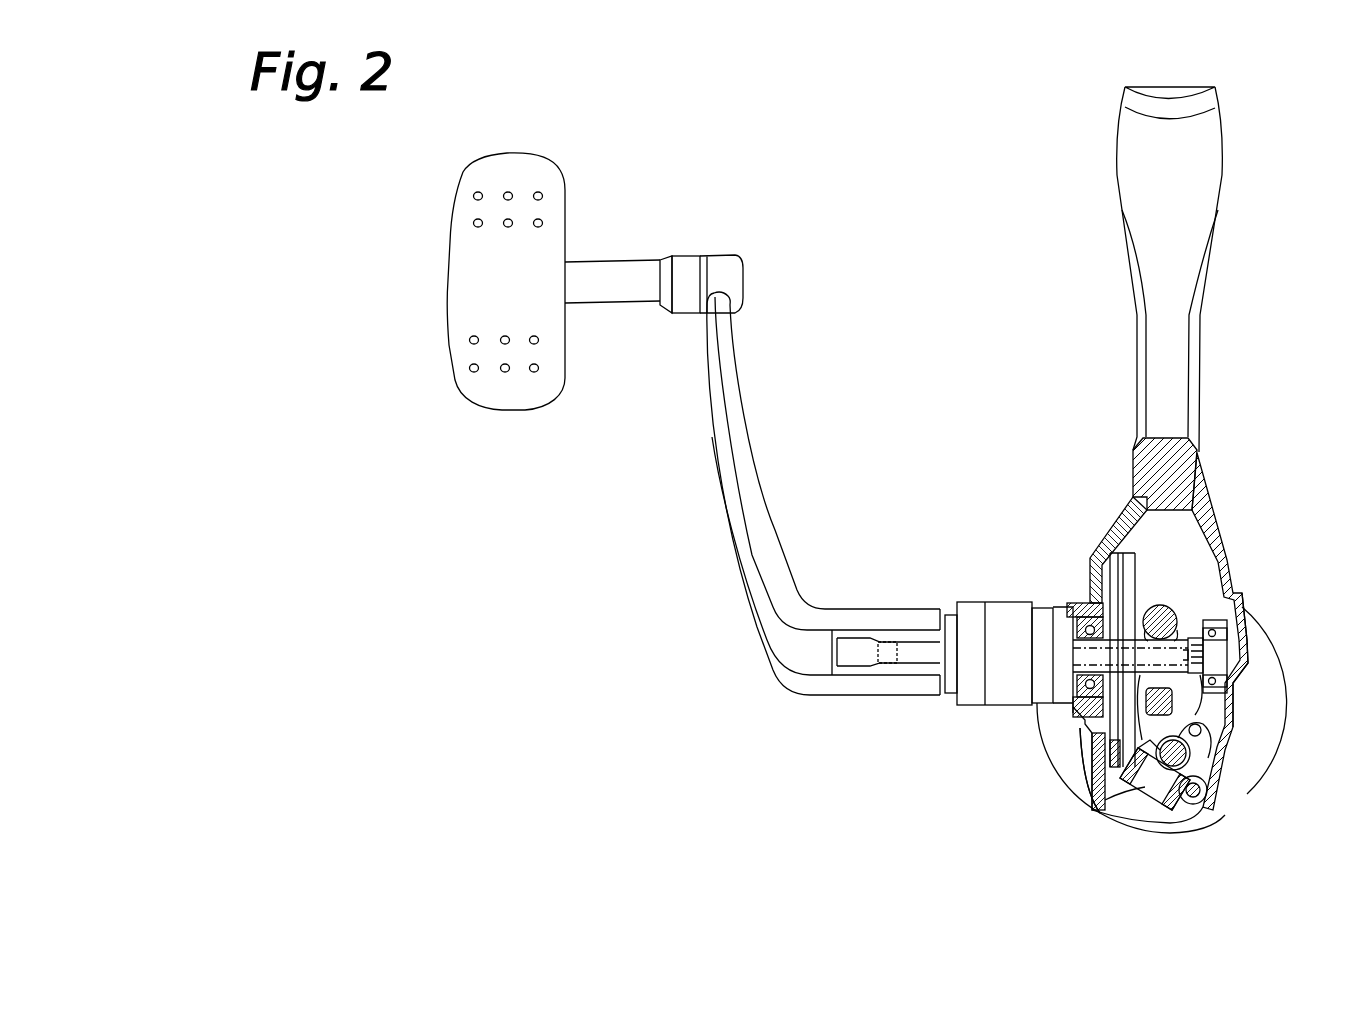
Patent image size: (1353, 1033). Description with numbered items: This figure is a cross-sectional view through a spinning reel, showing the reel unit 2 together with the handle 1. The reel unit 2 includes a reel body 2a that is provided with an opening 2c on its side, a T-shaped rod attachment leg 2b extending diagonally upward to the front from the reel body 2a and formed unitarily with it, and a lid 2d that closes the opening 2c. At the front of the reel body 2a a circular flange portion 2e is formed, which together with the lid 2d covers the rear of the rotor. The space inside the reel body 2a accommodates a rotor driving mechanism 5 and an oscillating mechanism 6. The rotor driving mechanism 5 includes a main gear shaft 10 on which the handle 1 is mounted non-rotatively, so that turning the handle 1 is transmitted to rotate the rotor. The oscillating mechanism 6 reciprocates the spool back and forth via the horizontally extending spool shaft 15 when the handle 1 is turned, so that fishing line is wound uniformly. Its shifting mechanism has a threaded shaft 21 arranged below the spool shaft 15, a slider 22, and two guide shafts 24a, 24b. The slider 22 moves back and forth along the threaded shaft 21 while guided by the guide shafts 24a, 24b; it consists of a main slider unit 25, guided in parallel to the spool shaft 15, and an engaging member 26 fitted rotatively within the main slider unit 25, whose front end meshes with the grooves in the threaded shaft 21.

The handle 1 is at (757, 386).
The reel unit 2 is at (1222, 528).
The reel body 2a is at (1240, 592).
The rod attachment leg 2b is at (1192, 306).
The opening 2c is at (1133, 497).
The lid 2d is at (1105, 540).
The flange portion 2e is at (1047, 728).
The rotor driving mechanism 5 is at (1150, 592).
The oscillating mechanism 6 is at (1116, 796).
The main gear shaft 10 is at (1184, 640).
The spool shaft 15 is at (1140, 785).
The threaded shaft 21 is at (1195, 806).
The slider 22 is at (1190, 710).
The guide shaft 24a is at (1190, 770).
The guide shaft 24b is at (1200, 805).
The main slider unit 25 is at (1085, 775).
The engaging member 26 is at (1162, 800).